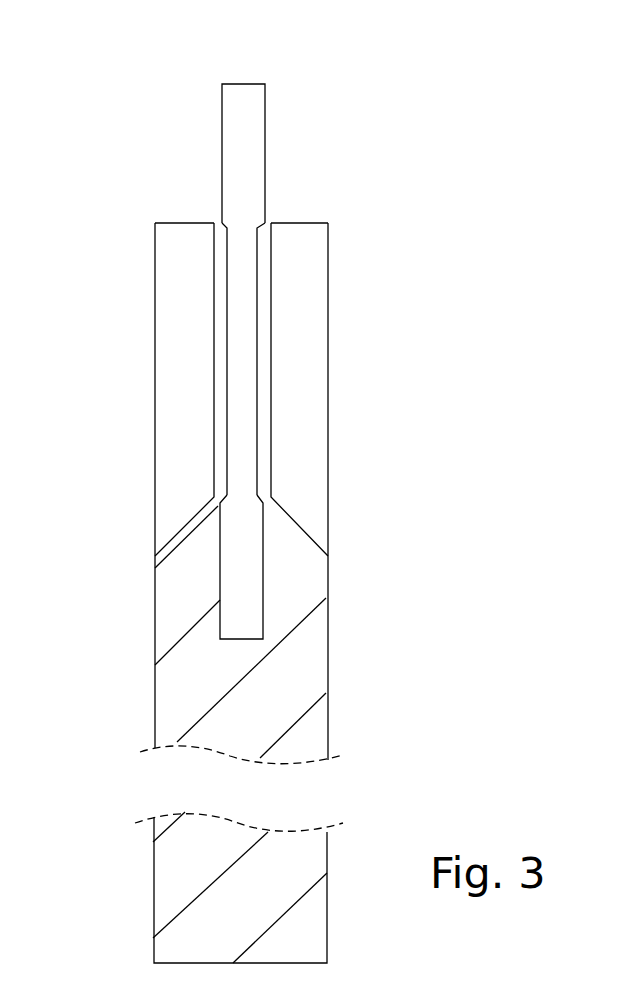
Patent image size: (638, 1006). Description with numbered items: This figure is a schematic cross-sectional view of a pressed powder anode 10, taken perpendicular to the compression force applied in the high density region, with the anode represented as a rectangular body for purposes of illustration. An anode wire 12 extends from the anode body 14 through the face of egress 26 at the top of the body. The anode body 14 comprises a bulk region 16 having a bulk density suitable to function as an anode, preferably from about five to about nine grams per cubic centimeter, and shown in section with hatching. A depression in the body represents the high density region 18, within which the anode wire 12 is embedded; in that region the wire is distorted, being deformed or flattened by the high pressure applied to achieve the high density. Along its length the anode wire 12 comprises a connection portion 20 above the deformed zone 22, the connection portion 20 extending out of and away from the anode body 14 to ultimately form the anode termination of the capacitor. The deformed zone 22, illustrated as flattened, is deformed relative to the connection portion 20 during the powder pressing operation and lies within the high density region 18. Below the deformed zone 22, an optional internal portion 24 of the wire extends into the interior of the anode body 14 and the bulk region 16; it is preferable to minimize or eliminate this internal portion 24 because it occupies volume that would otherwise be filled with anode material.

The pressed powder anode 10 is at (403, 198).
The anode wire 12 is at (210, 142).
The anode body 14 is at (330, 660).
The bulk region 16 is at (192, 675).
The high density region 18 is at (272, 360).
The connection portion 20 is at (248, 167).
The deformed zone 22 is at (240, 368).
The internal portion 24 is at (237, 568).
The face of egress 26 is at (188, 222).